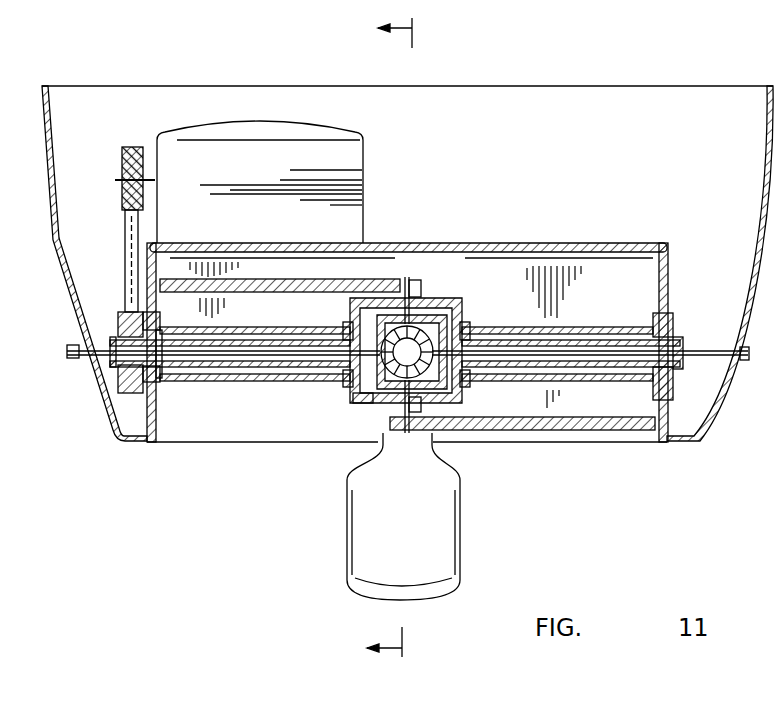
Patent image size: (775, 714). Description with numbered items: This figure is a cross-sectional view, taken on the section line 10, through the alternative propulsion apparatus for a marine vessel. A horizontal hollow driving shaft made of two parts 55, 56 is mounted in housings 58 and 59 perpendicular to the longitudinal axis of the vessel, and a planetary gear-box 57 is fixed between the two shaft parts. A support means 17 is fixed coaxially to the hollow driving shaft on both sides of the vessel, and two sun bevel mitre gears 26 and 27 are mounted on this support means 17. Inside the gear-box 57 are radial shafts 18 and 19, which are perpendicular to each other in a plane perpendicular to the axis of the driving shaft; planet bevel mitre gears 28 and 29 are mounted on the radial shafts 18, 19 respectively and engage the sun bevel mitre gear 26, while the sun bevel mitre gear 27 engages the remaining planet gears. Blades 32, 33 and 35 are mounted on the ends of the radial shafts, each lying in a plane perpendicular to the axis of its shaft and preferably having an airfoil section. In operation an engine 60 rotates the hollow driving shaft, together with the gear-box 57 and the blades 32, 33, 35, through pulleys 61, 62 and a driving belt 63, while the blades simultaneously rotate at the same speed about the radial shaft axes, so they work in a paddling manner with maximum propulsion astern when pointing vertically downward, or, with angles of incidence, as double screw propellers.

The section line 10 is at (372, 338).
The support means 17 is at (95, 383).
The radial shaft 18 is at (405, 277).
The radial shaft 19 is at (452, 470).
The sun bevel mitre gear 26 is at (463, 330).
The sun bevel mitre gear 27 is at (357, 407).
The planet bevel mitre gear 28 is at (423, 317).
The planet bevel mitre gear 29 is at (384, 408).
The blade 32 is at (340, 279).
The blade 33 is at (567, 430).
The blade 35 is at (445, 570).
The driving shaft part 55 is at (227, 367).
The driving shaft part 56 is at (510, 367).
The gear-box 57 is at (347, 397).
The housing 58 is at (183, 385).
The housing 59 is at (615, 380).
The engine 60 is at (230, 128).
The pulley 61 is at (128, 167).
The pulley 62 is at (128, 327).
The driving belt 63 is at (128, 238).